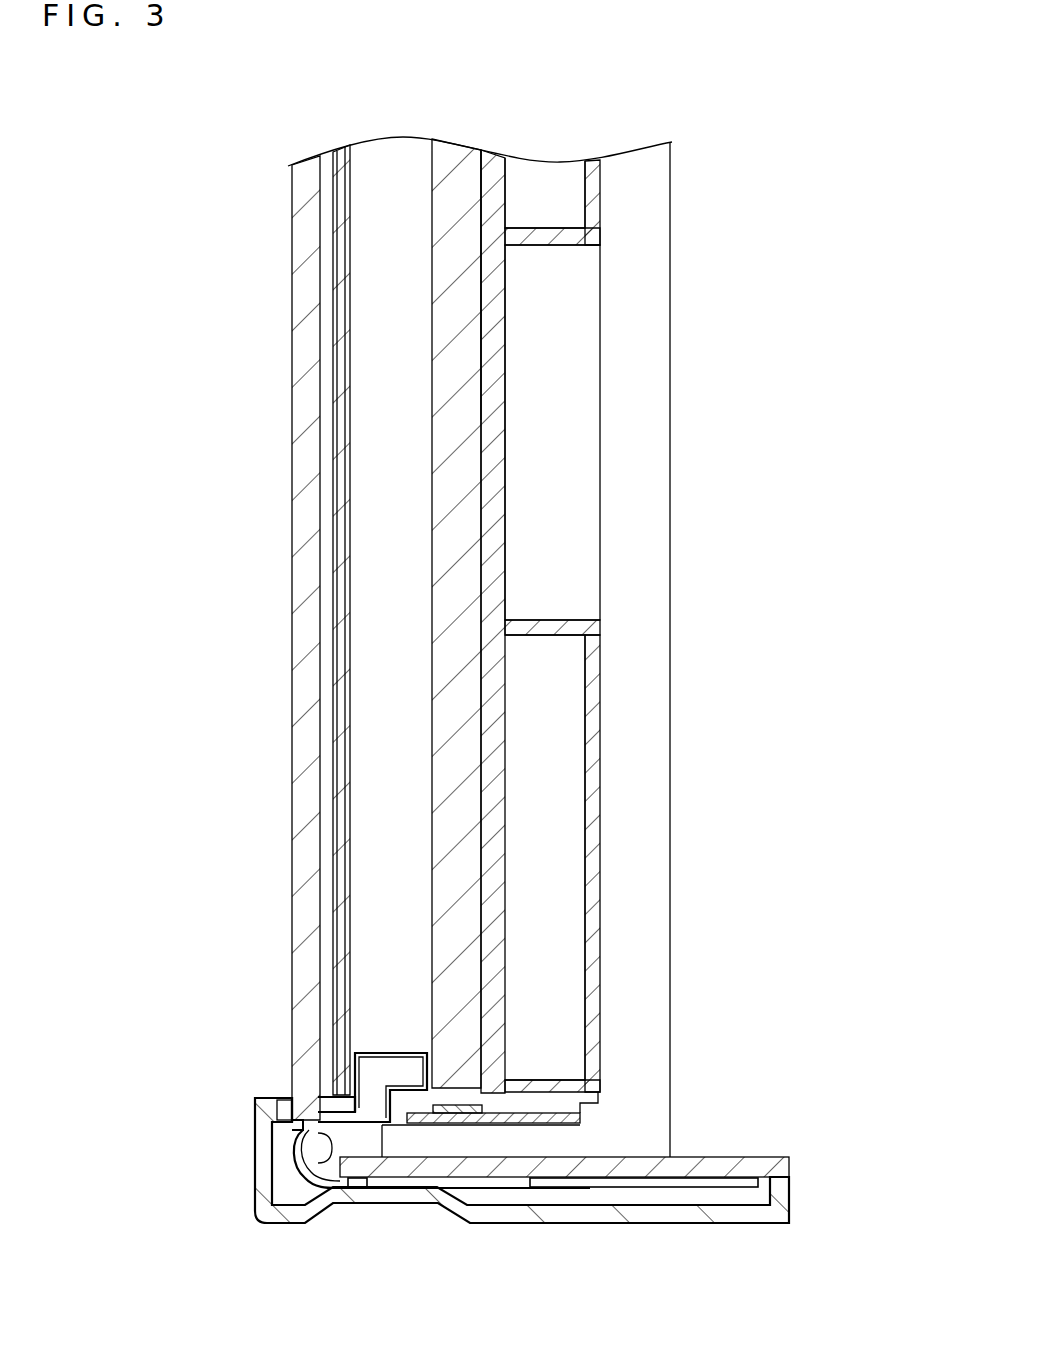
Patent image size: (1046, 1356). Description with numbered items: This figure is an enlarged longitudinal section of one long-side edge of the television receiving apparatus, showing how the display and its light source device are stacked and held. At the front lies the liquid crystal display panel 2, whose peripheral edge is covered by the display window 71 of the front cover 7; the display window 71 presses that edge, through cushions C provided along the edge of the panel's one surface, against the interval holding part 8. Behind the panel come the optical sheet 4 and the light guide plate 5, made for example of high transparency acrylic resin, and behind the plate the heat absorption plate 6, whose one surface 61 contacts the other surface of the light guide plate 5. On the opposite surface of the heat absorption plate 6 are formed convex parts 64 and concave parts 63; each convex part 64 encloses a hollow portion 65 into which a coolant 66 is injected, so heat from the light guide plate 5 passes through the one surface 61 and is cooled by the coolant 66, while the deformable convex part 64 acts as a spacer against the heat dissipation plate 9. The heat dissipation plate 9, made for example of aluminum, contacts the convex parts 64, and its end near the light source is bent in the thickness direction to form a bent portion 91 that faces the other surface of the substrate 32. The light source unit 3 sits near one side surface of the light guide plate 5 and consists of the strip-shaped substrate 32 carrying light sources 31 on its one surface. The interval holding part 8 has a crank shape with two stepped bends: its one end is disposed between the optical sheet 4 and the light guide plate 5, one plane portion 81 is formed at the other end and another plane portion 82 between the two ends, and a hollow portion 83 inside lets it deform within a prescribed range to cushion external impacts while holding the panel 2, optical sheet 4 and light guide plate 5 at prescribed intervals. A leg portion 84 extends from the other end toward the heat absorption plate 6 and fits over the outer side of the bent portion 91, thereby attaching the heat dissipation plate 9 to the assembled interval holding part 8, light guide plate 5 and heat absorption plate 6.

The liquid crystal display panel 2 is at (305, 855).
The light source unit 3 is at (493, 1197).
The light source 31 is at (462, 1123).
The substrate 32 is at (483, 1123).
The optical sheet 4 is at (341, 766).
The light guide plate 5 is at (445, 690).
The heat absorption plate 6 is at (490, 168).
The one surface of the heat absorption plate 61 is at (482, 178).
The concave part 63 is at (537, 618).
The convex part 64 is at (595, 213).
The hollow portion 65 is at (586, 192).
The coolant 66 is at (543, 178).
The front cover 7 is at (273, 1228).
The display window 71 is at (284, 1101).
The interval holding part 8 is at (491, 1169).
The plane portion 81 is at (300, 1160).
The plane portion 82 is at (353, 1080).
The hollow portion 83 is at (382, 1102).
The leg portion 84 is at (762, 1170).
The heat dissipation plate 9 is at (650, 866).
The bent portion 91 is at (562, 1141).
The cushion C is at (300, 1112).